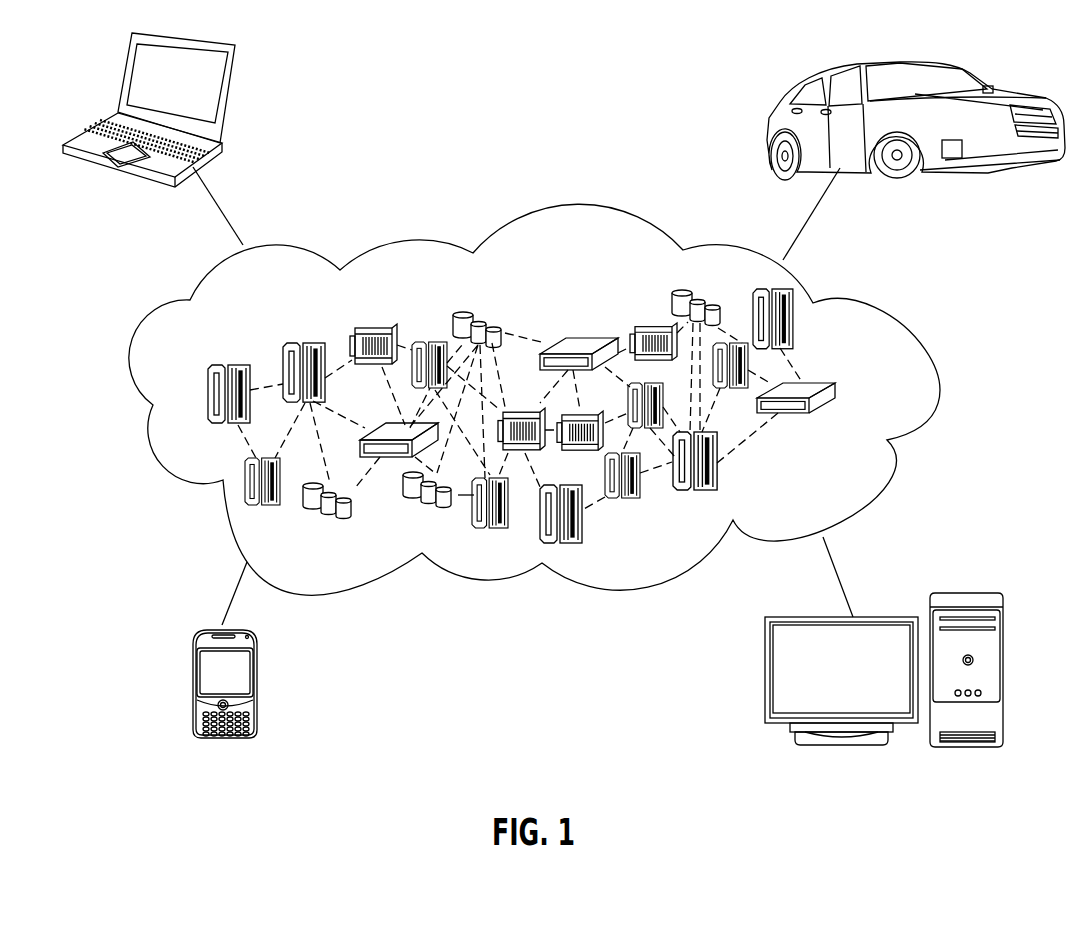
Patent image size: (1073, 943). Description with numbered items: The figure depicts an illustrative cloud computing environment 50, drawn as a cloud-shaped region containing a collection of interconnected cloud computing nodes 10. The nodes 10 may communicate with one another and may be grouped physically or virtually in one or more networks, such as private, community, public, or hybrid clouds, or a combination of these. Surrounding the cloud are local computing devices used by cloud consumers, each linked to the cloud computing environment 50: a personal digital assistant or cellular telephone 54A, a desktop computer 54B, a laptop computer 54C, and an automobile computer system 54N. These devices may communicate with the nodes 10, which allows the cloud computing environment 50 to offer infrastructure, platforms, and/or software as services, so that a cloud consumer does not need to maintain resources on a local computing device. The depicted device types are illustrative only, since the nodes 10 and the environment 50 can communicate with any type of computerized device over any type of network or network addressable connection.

The cloud computing nodes 10 is at (597, 416).
The cloud computing environment 50 is at (895, 313).
The personal digital assistant or cellular telephone 54A is at (193, 688).
The desktop computer 54B is at (973, 593).
The laptop computer 54C is at (232, 98).
The automobile computer system 54N is at (773, 107).